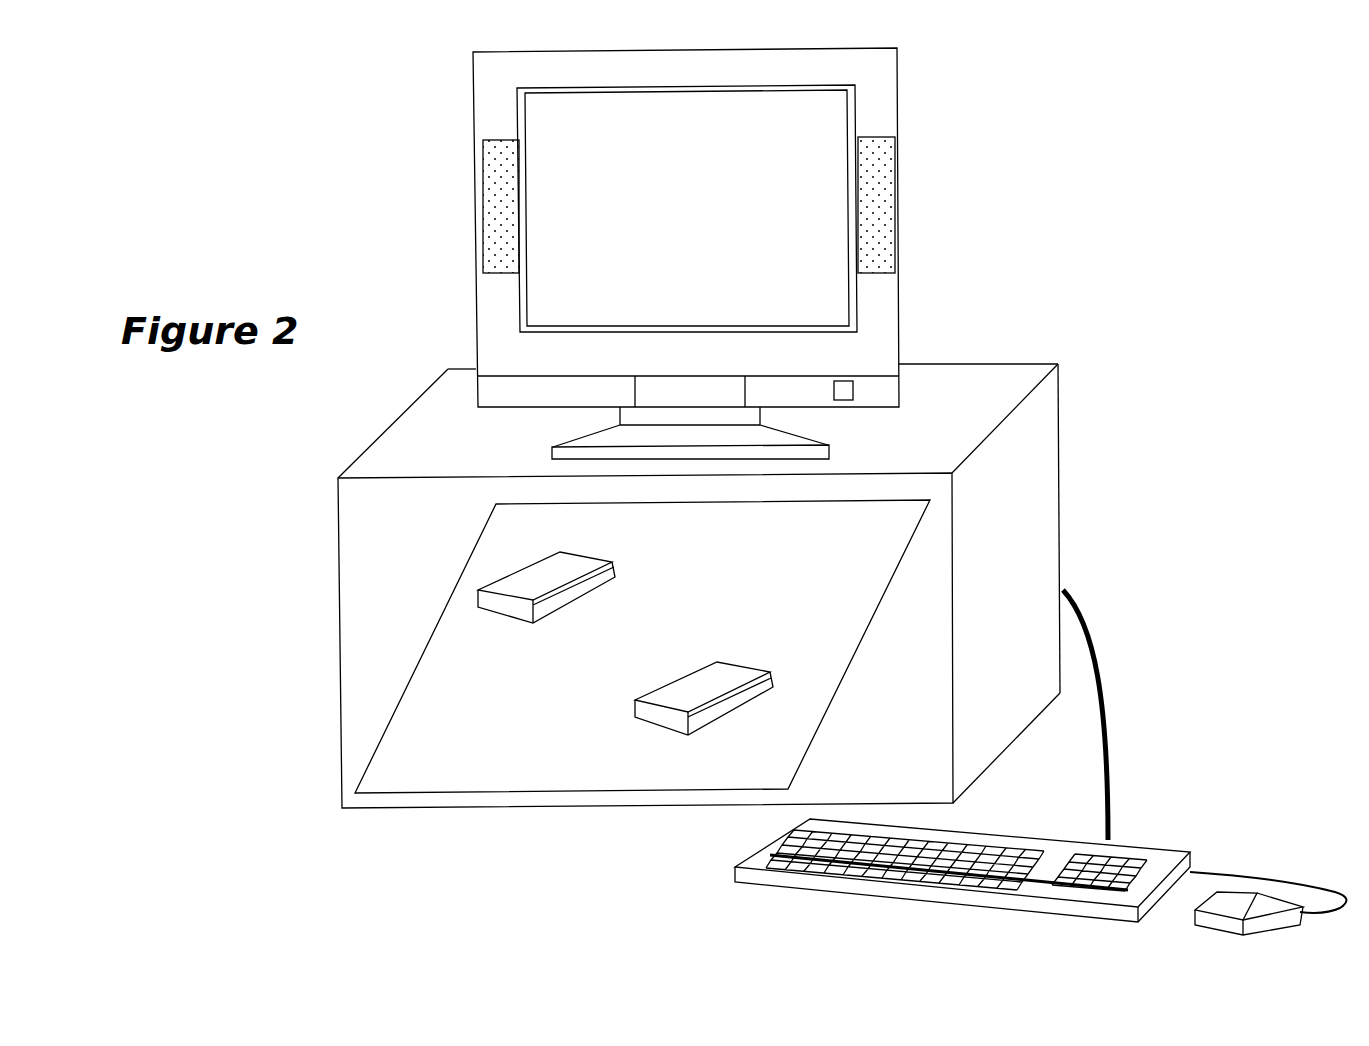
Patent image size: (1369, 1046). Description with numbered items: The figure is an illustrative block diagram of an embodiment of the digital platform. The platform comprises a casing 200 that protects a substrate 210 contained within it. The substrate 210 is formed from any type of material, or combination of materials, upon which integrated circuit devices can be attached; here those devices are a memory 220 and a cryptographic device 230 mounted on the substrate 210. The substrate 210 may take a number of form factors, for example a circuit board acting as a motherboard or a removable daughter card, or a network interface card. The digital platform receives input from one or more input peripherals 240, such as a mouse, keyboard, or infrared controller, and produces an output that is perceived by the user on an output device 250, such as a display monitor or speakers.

The casing 200 is at (1062, 495).
The substrate 210 is at (517, 774).
The memory 220 is at (568, 565).
The cryptographic device 230 is at (725, 680).
The input peripherals 240 is at (1170, 818).
The output device 250 is at (908, 202).